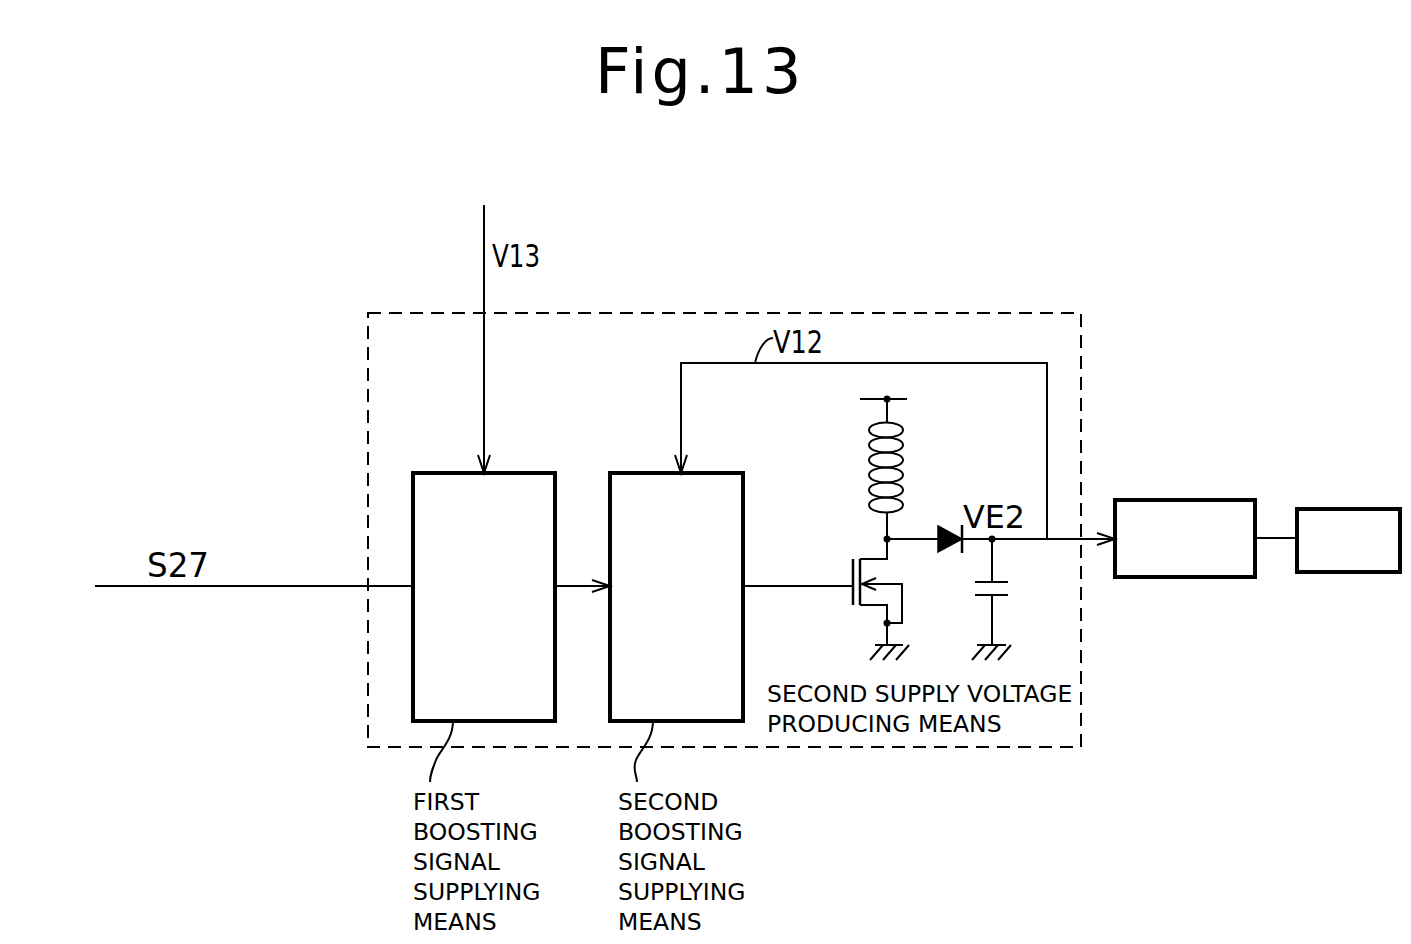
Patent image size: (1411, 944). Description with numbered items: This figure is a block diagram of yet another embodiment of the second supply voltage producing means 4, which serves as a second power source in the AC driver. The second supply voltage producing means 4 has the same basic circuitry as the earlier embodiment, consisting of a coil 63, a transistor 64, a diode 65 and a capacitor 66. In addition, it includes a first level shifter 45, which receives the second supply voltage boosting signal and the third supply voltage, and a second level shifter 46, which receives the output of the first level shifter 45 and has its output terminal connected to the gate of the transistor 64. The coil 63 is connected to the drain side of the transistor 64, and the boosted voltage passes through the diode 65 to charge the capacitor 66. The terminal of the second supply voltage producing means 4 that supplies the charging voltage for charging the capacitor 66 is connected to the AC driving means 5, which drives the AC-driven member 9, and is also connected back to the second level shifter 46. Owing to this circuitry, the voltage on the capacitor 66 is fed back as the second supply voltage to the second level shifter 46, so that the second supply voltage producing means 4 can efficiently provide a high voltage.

The second supply voltage producing means 4 is at (873, 313).
The first level shifter 45 is at (440, 473).
The second level shifter 46 is at (646, 473).
The coil 63 is at (868, 447).
The transistor 64 is at (850, 597).
The diode 65 is at (955, 550).
The capacitor 66 is at (1000, 597).
The AC driving means 5 is at (1178, 500).
The AC-driven member 9 is at (1340, 509).